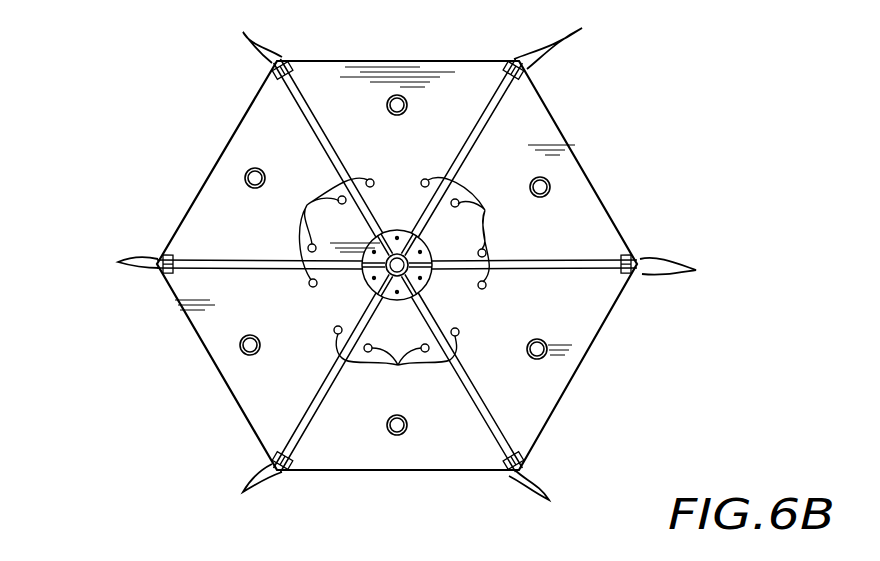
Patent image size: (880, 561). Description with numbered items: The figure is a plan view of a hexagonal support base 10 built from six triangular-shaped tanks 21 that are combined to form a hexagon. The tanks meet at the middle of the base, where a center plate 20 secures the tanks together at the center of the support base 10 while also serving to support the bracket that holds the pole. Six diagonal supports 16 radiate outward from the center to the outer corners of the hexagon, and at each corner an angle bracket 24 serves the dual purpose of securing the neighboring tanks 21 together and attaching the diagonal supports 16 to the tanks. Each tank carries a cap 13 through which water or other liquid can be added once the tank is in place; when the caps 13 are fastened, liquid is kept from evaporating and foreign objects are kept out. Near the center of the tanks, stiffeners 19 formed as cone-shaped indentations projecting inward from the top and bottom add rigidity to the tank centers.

The support base 10 is at (90, 160).
The cap 13 is at (397, 95).
The diagonal support 16 is at (508, 72).
The stiffener 19 is at (307, 205).
The center plate 20 is at (430, 285).
The triangular-shaped tank 21 is at (332, 60).
The angle bracket 24 is at (407, 266).